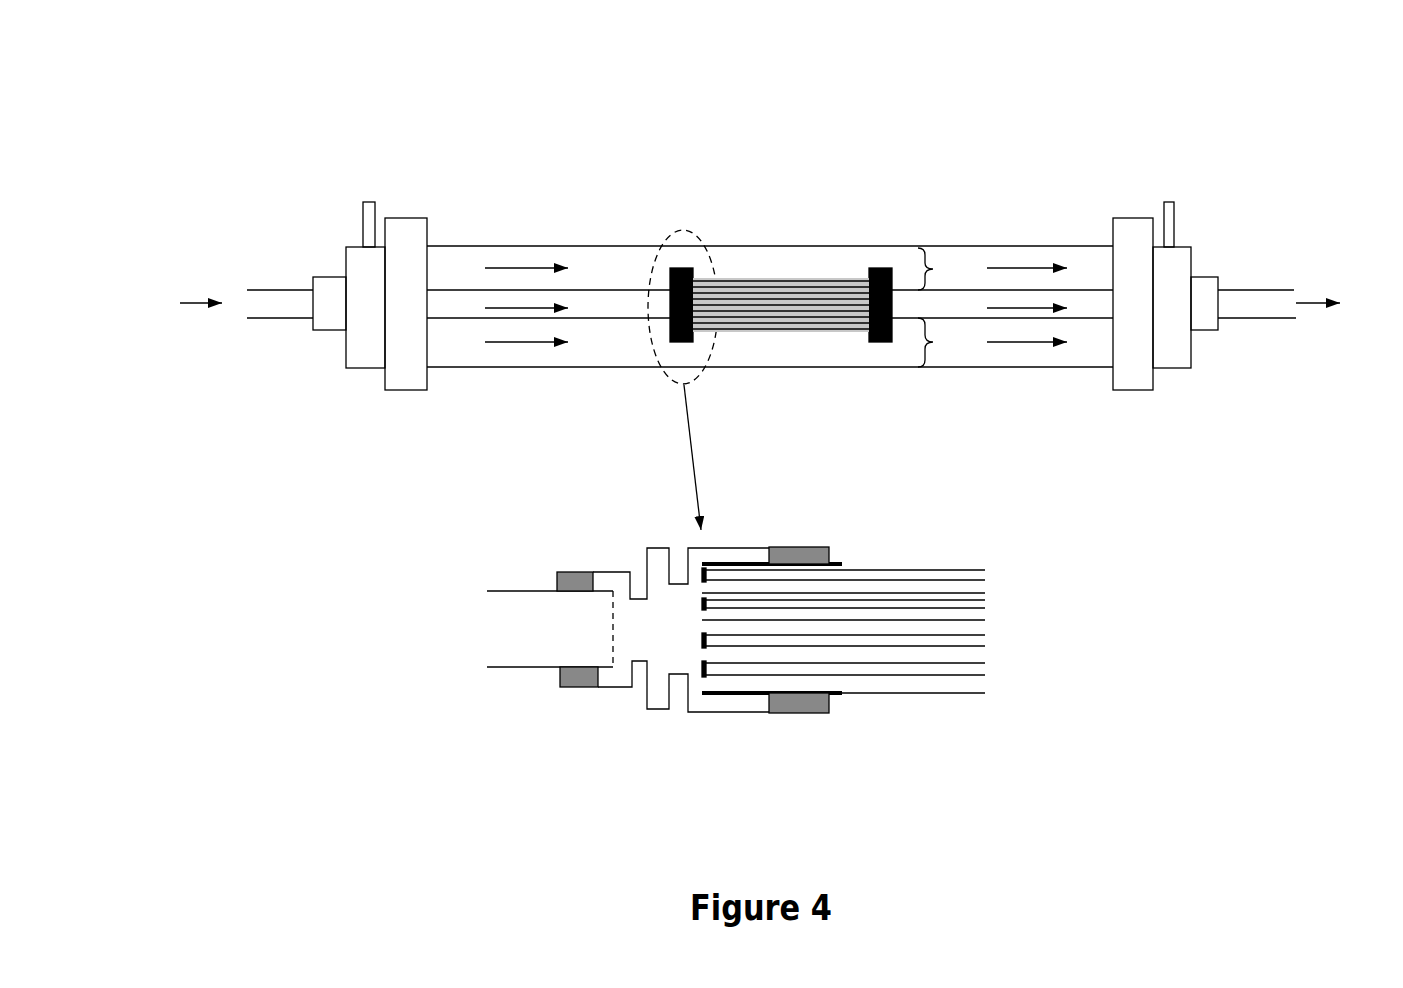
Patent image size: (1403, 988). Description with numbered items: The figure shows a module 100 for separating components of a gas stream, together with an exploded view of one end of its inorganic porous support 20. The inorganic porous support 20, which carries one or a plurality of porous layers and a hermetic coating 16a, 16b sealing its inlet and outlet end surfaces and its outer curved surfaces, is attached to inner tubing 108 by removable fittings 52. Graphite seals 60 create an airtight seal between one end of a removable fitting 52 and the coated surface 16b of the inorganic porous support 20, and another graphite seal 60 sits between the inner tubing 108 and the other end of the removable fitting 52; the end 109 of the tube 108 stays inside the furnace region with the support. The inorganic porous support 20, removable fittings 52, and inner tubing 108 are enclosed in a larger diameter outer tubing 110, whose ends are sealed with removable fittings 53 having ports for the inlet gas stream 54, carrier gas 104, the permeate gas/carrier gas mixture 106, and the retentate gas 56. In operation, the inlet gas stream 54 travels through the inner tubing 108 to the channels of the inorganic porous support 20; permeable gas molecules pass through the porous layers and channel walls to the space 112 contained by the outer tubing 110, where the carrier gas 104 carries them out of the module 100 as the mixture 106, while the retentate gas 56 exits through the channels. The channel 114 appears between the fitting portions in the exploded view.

The module 100 is at (263, 102).
The carrier gas 104 is at (369, 183).
The permeate gas/carrier gas mixture 106 is at (1169, 187).
The inner tubing 108 is at (275, 288).
The inlet gas stream 54 is at (173, 334).
The retentate gas 56 is at (1344, 335).
The removable fittings 53 is at (362, 368).
The space 112 is at (940, 337).
The outer tubing 110 is at (1013, 368).
The inorganic porous support 20 is at (902, 562).
The channel 114 is at (655, 615).
The end of tube 109 is at (593, 598).
The graphite seals 60 is at (578, 680).
The removable fittings 52 is at (642, 693).
The hermetic coating 16a is at (703, 677).
The hermetic coating 16b is at (740, 695).